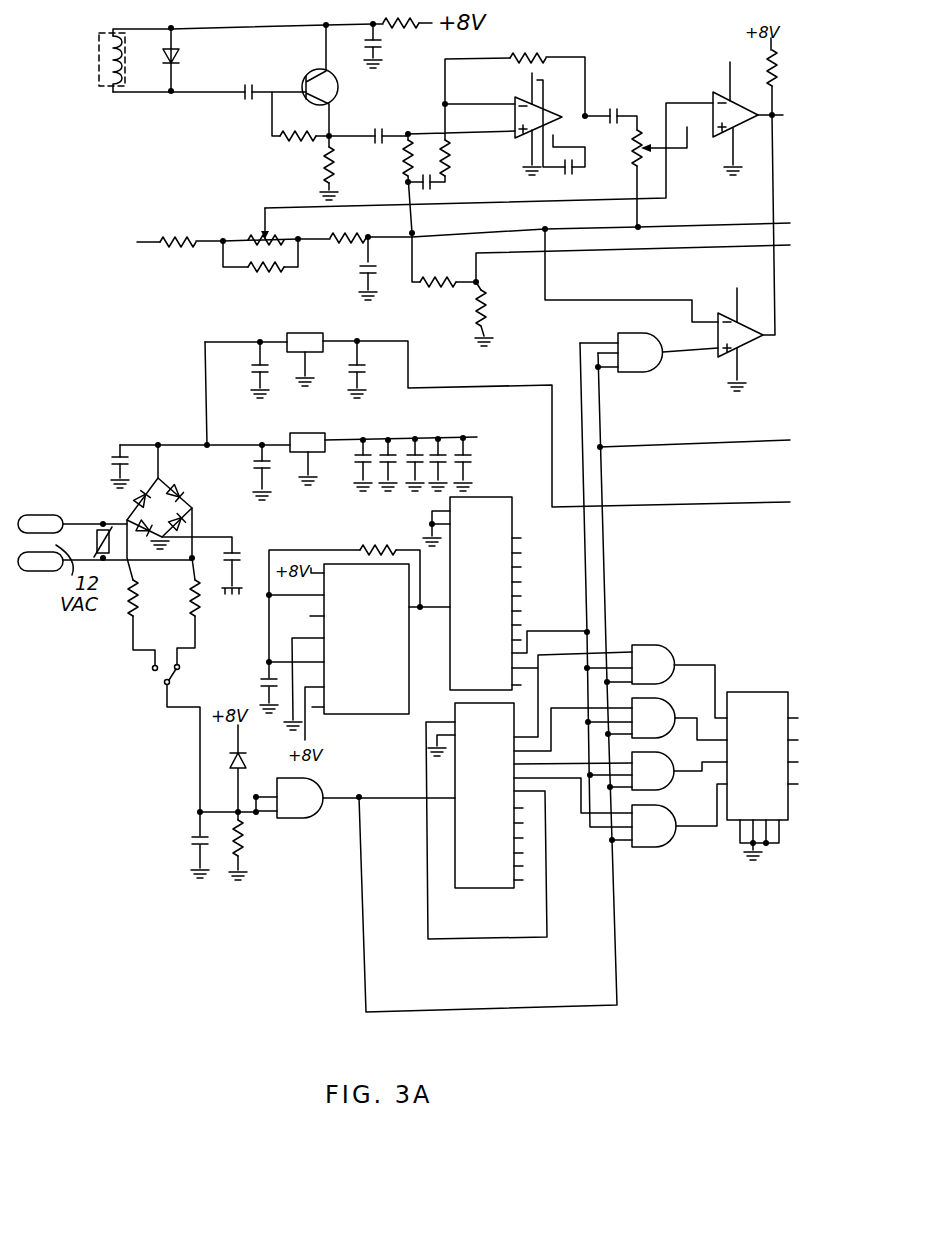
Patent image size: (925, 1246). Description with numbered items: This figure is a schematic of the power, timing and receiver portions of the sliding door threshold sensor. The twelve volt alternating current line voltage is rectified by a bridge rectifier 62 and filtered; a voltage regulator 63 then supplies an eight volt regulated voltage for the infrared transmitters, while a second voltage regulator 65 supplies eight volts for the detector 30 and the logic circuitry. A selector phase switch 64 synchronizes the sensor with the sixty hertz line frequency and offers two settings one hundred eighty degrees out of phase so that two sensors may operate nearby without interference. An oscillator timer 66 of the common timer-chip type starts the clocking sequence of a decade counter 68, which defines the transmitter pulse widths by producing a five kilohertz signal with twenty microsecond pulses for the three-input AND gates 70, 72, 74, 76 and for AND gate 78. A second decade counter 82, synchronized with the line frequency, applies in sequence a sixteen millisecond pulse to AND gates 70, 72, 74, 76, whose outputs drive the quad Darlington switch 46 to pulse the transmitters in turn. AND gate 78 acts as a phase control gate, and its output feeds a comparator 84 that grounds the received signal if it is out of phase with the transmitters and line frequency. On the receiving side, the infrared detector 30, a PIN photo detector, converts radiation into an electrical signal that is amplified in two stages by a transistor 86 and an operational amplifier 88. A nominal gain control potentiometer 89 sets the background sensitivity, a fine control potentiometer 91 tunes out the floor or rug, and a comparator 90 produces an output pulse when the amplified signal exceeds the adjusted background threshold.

The infrared detector 30 is at (180, 55).
The transistor 86 is at (338, 92).
The operational amplifier 88 is at (514, 100).
The nominal gain control potentiometer 89 is at (644, 140).
The comparator 90 is at (720, 137).
The fine control potentiometer 91 is at (262, 225).
The voltage regulator 63 is at (312, 333).
The second voltage regulator 65 is at (299, 433).
The bridge rectifier 62 is at (181, 485).
The selector phase switch 64 is at (176, 675).
The oscillator timer 66 is at (367, 715).
The decade counter 68 is at (513, 522).
The second decade counter 82 is at (470, 889).
The AND gate 78 is at (656, 369).
The comparator 84 is at (748, 349).
The 3-input AND gate 70 is at (667, 645).
The 3-input AND gate 72 is at (665, 698).
The 3-input AND gate 74 is at (664, 752).
The 3-input AND gate 76 is at (664, 808).
The Darlington switch 46 is at (742, 692).